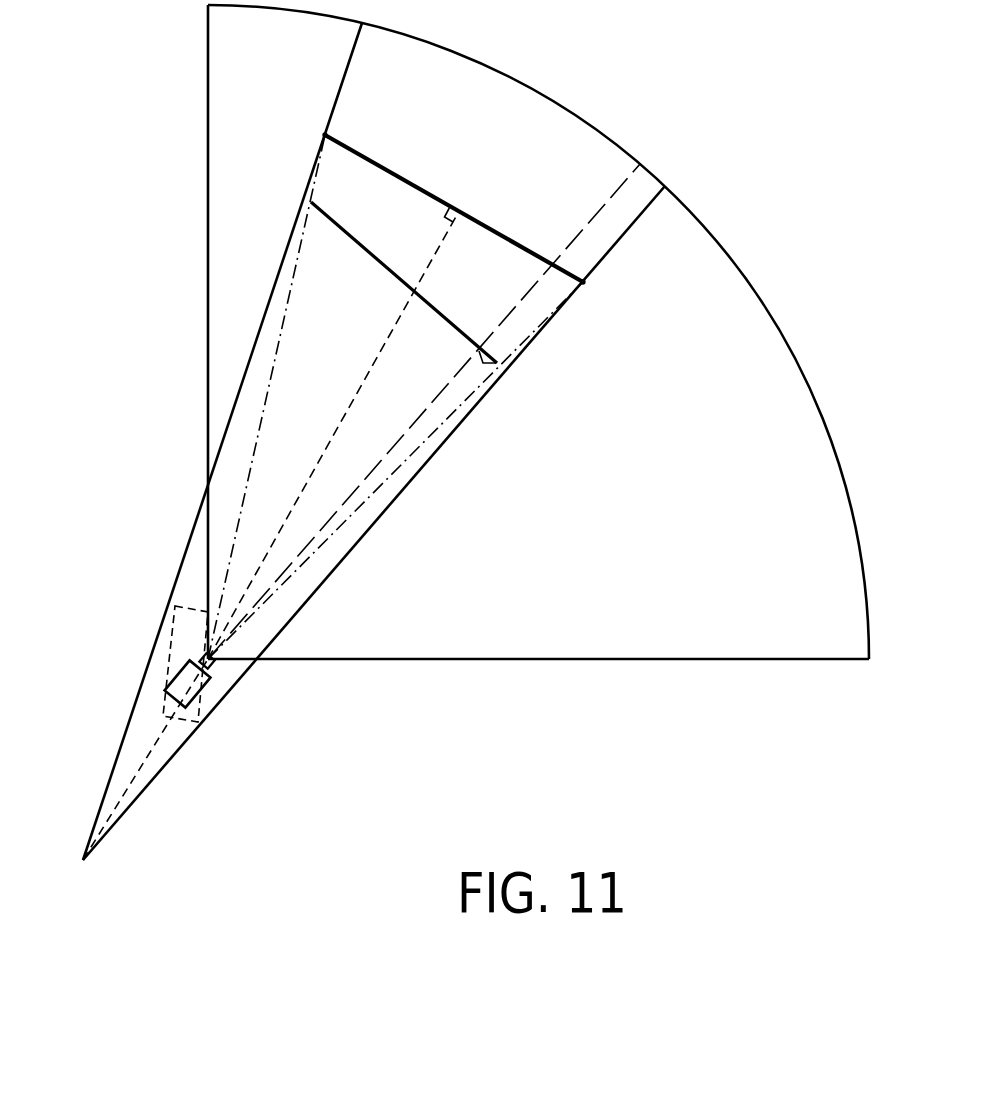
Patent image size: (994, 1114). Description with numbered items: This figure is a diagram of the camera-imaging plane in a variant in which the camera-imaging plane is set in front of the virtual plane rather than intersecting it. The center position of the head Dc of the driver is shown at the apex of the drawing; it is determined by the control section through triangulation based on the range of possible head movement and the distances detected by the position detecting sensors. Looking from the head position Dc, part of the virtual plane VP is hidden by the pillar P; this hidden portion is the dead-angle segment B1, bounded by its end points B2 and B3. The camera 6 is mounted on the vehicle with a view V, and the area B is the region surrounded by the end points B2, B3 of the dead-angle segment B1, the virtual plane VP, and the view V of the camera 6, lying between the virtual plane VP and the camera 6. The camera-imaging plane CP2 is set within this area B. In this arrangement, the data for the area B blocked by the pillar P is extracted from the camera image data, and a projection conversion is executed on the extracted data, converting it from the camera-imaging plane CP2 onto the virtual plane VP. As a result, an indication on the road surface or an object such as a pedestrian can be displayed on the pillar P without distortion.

The center position of the head Dc is at (83, 862).
The dead-angle segment B1 is at (517, 243).
The end point of the dead-angle segment B2 is at (323, 135).
The end point of the dead-angle segment B3 is at (583, 282).
The area B is at (521, 347).
The virtual plane VP is at (424, 190).
The camera-imaging plane CP2 is at (362, 245).
The pillar P is at (193, 610).
The camera 6 is at (197, 703).
The view of the camera V is at (212, 659).